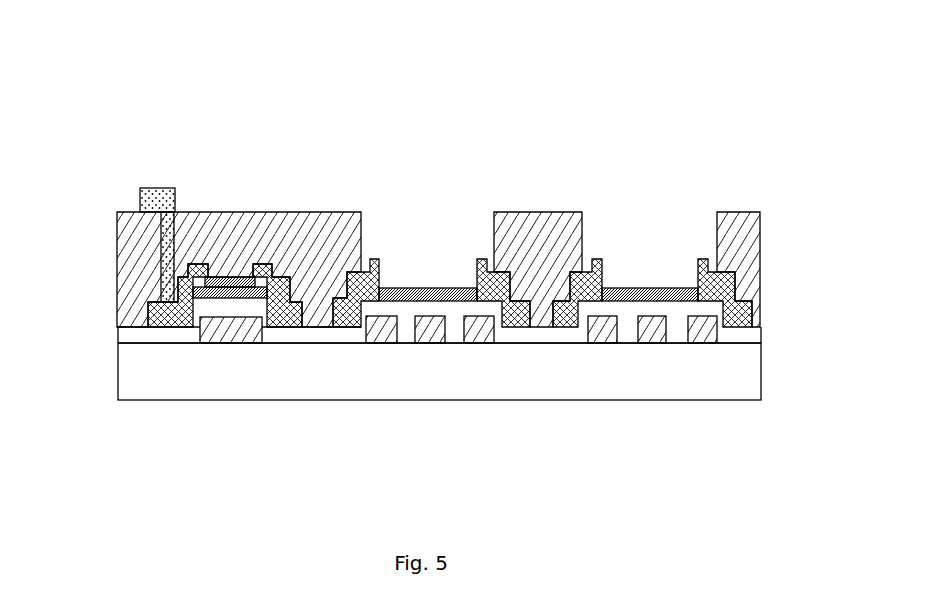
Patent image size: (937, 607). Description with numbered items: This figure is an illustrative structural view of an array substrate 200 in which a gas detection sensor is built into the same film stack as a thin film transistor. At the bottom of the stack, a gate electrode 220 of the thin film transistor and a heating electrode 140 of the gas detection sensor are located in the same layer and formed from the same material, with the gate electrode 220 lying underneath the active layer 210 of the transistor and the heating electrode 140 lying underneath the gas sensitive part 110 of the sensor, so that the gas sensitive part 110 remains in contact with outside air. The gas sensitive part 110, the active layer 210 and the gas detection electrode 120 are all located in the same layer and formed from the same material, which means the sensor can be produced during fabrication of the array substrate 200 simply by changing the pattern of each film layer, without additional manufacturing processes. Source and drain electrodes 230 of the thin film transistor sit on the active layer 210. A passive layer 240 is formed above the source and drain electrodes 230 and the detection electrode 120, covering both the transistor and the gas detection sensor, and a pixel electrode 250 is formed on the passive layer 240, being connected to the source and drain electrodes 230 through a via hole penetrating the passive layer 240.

The array substrate 200 is at (418, 95).
The gas sensitive part 110 is at (642, 285).
The gas detection electrode 120 is at (583, 270).
The heating electrode 140 is at (651, 330).
The active layer 210 is at (224, 277).
The gate electrode 220 is at (217, 330).
The source and drain electrodes 230 is at (172, 323).
The passive layer 240 is at (305, 242).
The pixel electrode 250 is at (152, 192).